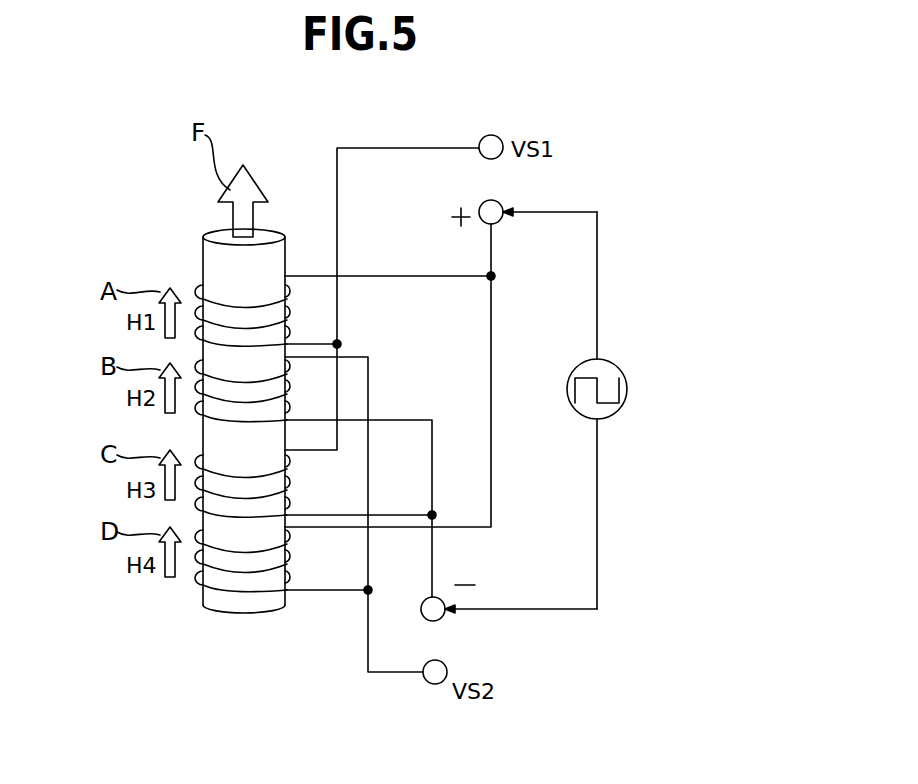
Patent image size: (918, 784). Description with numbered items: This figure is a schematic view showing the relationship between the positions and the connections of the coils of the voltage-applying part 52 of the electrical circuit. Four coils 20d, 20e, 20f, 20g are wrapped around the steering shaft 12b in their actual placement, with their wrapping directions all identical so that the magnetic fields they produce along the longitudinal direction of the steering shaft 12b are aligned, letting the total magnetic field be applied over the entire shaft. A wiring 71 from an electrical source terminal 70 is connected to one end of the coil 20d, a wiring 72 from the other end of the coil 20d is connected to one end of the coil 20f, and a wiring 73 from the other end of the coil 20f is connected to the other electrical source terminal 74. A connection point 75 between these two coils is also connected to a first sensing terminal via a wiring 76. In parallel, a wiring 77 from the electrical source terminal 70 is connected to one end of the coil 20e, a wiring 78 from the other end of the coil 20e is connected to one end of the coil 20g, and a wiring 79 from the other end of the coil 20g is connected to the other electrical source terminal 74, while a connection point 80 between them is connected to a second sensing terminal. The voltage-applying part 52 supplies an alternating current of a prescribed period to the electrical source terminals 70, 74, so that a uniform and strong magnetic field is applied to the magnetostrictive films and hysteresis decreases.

The steering shaft 12b is at (268, 243).
The coil 20d is at (203, 287).
The coil 20g is at (203, 365).
The coil 20f is at (203, 455).
The coil 20e is at (203, 578).
The electrical source terminal 70 is at (503, 208).
The wiring 71 is at (388, 276).
The wiring 72 is at (312, 344).
The wiring 73 is at (320, 515).
The electrical source terminal 74 is at (445, 619).
The connection point 75 is at (341, 344).
The wiring 76 is at (393, 148).
The wiring 77 is at (494, 357).
The wiring 78 is at (320, 592).
The wiring 79 is at (405, 420).
The connection point 80 is at (372, 593).
The voltage-applying part 52 is at (628, 389).